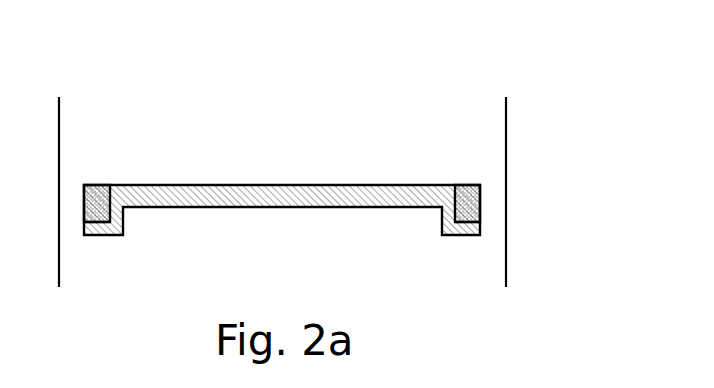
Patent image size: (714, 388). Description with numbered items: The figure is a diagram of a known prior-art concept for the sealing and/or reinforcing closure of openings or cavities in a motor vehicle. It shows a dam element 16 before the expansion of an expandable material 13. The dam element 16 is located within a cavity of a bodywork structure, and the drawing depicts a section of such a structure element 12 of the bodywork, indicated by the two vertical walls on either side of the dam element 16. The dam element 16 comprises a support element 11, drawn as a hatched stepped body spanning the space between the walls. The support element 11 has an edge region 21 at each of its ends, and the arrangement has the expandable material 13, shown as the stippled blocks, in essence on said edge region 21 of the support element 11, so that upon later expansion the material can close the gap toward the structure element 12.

The support element 11 is at (275, 197).
The structure element 12 is at (506, 253).
The expandable material 13 is at (98, 195).
The dam element 16 is at (278, 154).
The edge region 21 is at (98, 235).